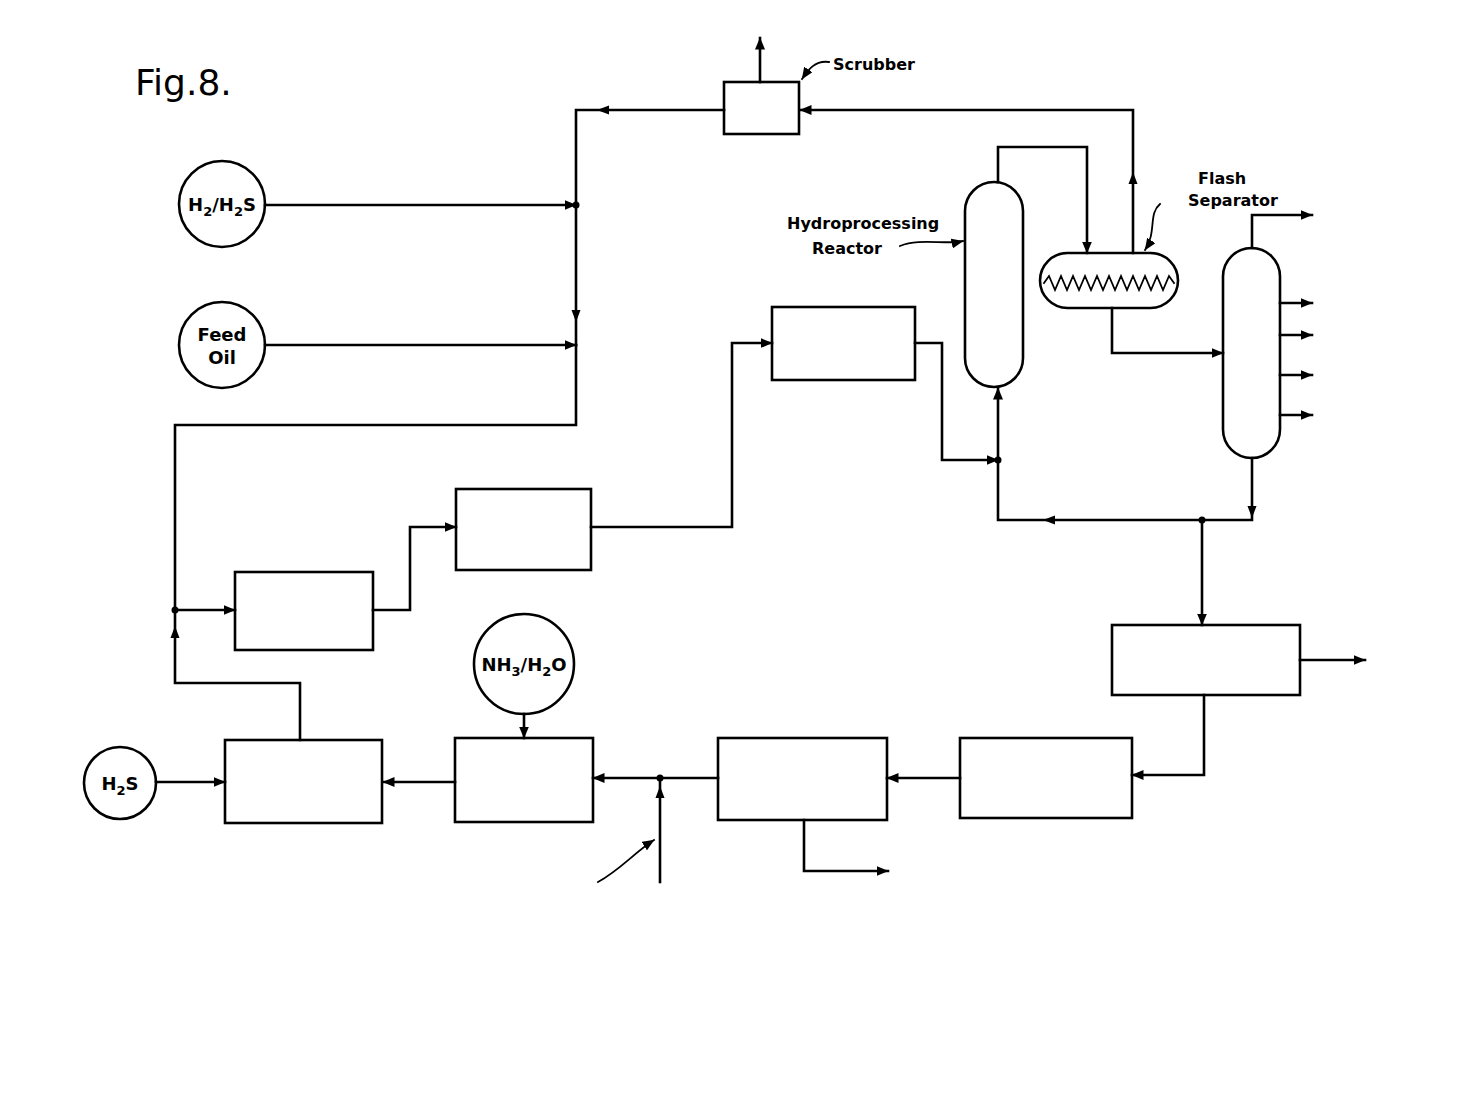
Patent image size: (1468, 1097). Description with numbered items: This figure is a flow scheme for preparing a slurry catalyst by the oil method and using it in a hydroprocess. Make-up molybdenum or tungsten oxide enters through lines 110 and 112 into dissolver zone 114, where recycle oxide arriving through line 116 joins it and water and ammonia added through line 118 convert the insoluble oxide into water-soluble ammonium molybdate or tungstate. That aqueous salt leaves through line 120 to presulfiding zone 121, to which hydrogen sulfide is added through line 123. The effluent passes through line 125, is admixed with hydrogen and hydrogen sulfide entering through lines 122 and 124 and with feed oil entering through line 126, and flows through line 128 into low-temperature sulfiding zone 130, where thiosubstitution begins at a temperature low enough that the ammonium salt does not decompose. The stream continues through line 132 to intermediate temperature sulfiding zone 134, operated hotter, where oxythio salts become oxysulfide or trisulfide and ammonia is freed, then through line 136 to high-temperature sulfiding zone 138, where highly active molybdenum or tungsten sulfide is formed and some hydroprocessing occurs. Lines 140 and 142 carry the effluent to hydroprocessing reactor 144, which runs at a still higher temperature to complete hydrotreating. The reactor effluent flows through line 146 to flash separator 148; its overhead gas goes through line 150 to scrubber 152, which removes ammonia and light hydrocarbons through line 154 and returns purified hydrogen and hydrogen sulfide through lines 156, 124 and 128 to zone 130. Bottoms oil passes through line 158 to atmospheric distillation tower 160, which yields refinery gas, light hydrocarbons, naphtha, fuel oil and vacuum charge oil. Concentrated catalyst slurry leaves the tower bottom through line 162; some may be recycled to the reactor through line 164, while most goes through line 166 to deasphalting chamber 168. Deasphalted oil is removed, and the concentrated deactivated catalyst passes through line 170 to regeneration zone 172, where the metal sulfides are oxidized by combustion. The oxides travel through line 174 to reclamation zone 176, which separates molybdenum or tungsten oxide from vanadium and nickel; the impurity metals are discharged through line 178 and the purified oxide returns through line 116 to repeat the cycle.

The line 110 is at (662, 858).
The line 112 is at (639, 751).
The dissolver zone 114 is at (462, 828).
The line 116 is at (679, 776).
The line 118 is at (532, 720).
The line 120 is at (418, 778).
The presulfiding zone 121 is at (333, 741).
The line 122 is at (447, 201).
The line 123 is at (189, 786).
The line 124 is at (577, 285).
The line 125 is at (252, 685).
The line 126 is at (446, 345).
The line 128 is at (577, 397).
The low-temperature sulfiding zone 130 is at (310, 576).
The line 132 is at (409, 558).
The intermediate temperature sulfiding zone 134 is at (454, 474).
The line 136 is at (733, 471).
The high-temperature sulfiding zone 138 is at (787, 312).
The line 140 is at (942, 422).
The line 142 is at (999, 421).
The hydroprocessing reactor 144 is at (964, 281).
The line 146 is at (1060, 149).
The flash separator 148 is at (1163, 267).
The line 150 is at (962, 110).
The scrubber 152 is at (790, 128).
The line 154 is at (758, 62).
The line 156 is at (577, 161).
The line 158 is at (1164, 354).
The atmospheric distillation tower 160 is at (1222, 424).
The line 162 is at (1238, 522).
The line 164 is at (1116, 520).
The line 166 is at (1201, 583).
The deasphalting chamber 168 is at (1111, 662).
The line 170 is at (1205, 758).
The regeneration zone 172 is at (1036, 731).
The line 174 is at (925, 776).
The reclamation zone 176 is at (802, 738).
The line 178 is at (840, 873).